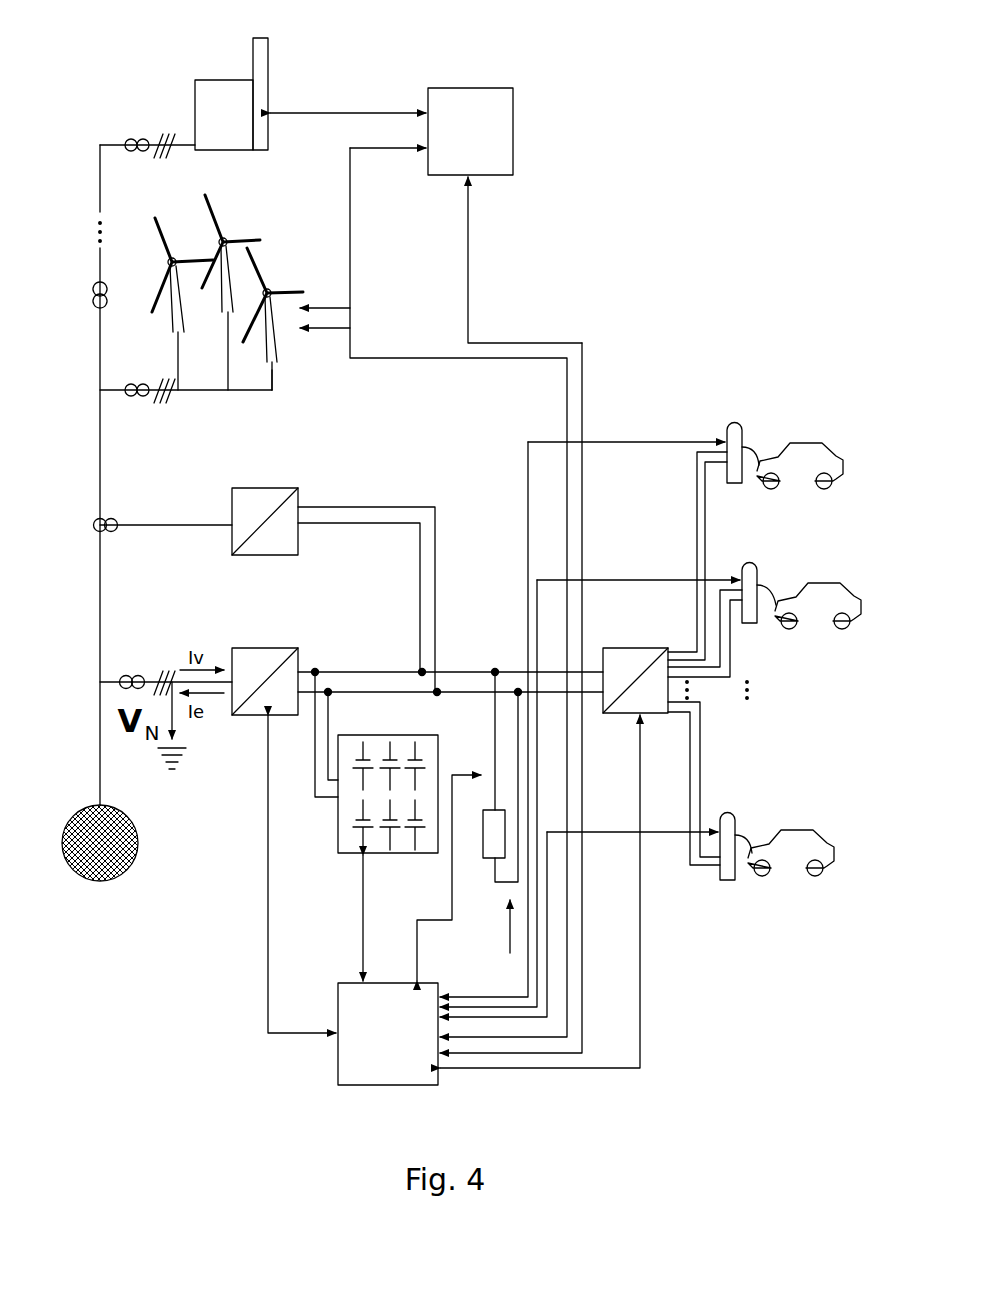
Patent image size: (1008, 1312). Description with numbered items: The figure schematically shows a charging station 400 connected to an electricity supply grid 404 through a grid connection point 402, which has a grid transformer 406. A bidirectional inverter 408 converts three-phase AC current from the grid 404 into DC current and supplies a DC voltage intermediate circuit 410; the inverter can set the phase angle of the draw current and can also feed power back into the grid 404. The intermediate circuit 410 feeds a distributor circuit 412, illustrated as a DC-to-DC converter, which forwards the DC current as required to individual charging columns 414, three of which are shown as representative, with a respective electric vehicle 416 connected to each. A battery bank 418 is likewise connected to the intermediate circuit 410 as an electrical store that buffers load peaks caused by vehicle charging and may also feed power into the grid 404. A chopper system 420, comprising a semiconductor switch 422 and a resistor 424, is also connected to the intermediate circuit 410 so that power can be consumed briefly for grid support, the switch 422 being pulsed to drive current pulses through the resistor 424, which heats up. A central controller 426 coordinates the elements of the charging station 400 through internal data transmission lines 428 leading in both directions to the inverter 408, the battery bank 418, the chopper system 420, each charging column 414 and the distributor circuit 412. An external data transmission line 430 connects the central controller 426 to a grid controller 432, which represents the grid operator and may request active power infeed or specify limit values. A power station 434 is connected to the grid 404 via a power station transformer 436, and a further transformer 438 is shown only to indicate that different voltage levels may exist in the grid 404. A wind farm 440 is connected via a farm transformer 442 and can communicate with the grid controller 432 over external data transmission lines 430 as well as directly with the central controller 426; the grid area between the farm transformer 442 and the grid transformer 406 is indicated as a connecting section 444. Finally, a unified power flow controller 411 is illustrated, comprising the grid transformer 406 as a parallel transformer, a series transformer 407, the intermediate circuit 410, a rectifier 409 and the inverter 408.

The charging station 400 is at (609, 1092).
The grid connection point 402 is at (128, 674).
The electricity supply grid 404 is at (140, 850).
The grid transformer 406 is at (158, 668).
The series transformer 407 is at (108, 532).
The bidirectional inverter 408 is at (264, 648).
The rectifier 409 is at (262, 488).
The DC voltage intermediate circuit 410 is at (315, 668).
The unified power flow controller 411 is at (428, 498).
The distributor circuit 412 is at (650, 648).
The charging column 414 is at (738, 422).
The electric vehicle 416 is at (813, 455).
The battery bank 418 is at (345, 845).
The chopper system 420 is at (507, 940).
The semiconductor switch 422 is at (493, 757).
The resistor 424 is at (483, 860).
The central controller 426 is at (343, 1060).
The internal data transmission line 428 is at (604, 442).
The external data transmission line 430 is at (330, 115).
The grid controller 432 is at (510, 130).
The power station 434 is at (271, 72).
The power station transformer 436 is at (131, 139).
The further transformer 438 is at (113, 297).
The wind farm 440 is at (283, 373).
The farm transformer 442 is at (152, 400).
The connecting section 444 is at (100, 487).